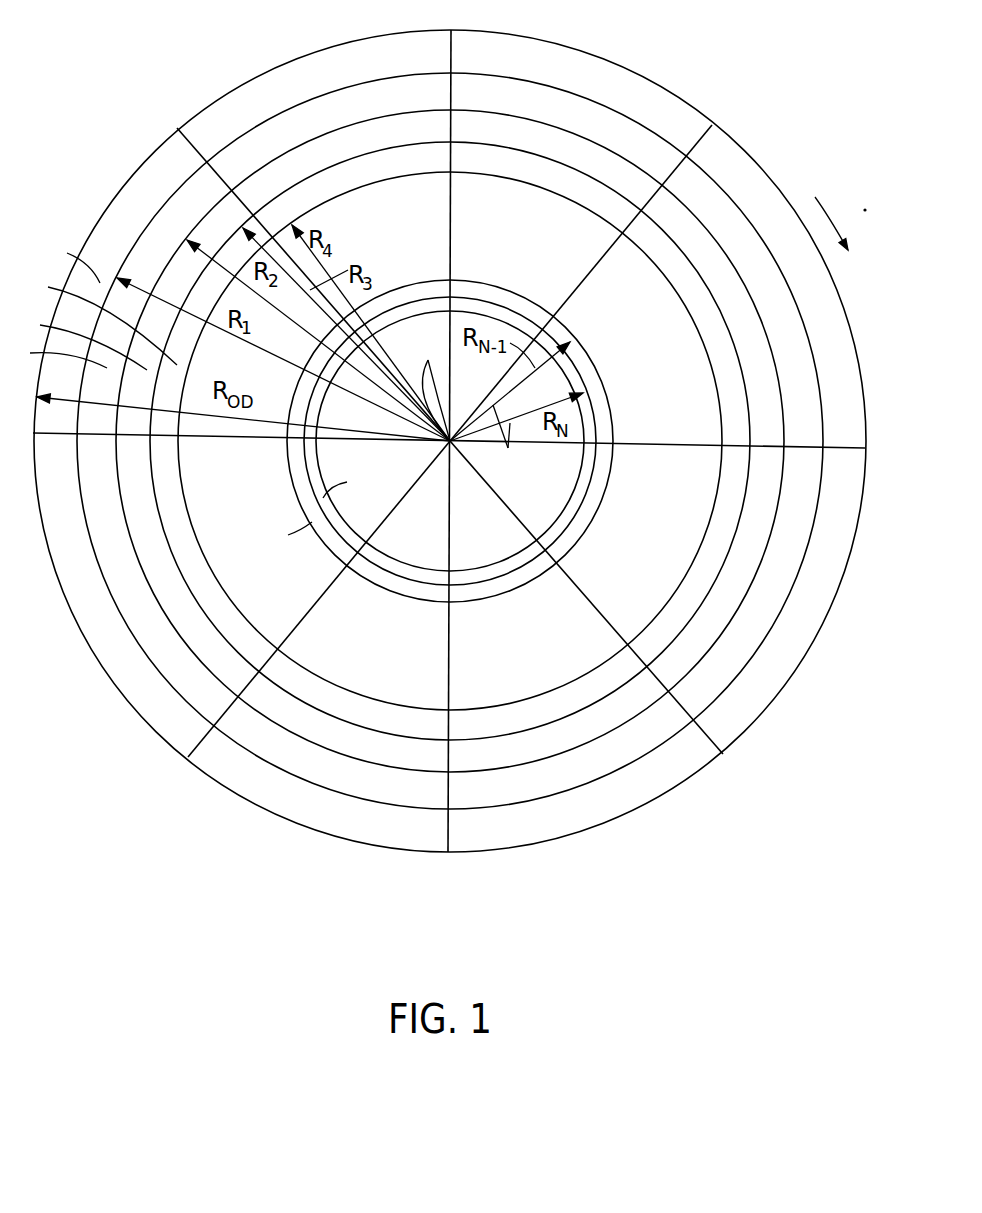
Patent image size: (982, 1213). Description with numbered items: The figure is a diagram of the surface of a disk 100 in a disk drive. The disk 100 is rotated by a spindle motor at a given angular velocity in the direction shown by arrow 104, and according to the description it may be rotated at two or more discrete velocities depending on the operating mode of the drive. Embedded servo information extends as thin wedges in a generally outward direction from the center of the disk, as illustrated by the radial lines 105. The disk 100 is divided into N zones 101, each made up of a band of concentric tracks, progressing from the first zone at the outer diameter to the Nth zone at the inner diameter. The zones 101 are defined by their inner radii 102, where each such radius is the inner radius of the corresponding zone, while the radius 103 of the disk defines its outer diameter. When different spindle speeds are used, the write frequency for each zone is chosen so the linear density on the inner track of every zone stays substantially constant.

The disk 100 is at (668, 43).
The zones 101 is at (417, 757).
The inner radii 102 is at (466, 407).
The radius 103 is at (267, 425).
The arrow 104 is at (815, 198).
The lines 105 is at (452, 212).